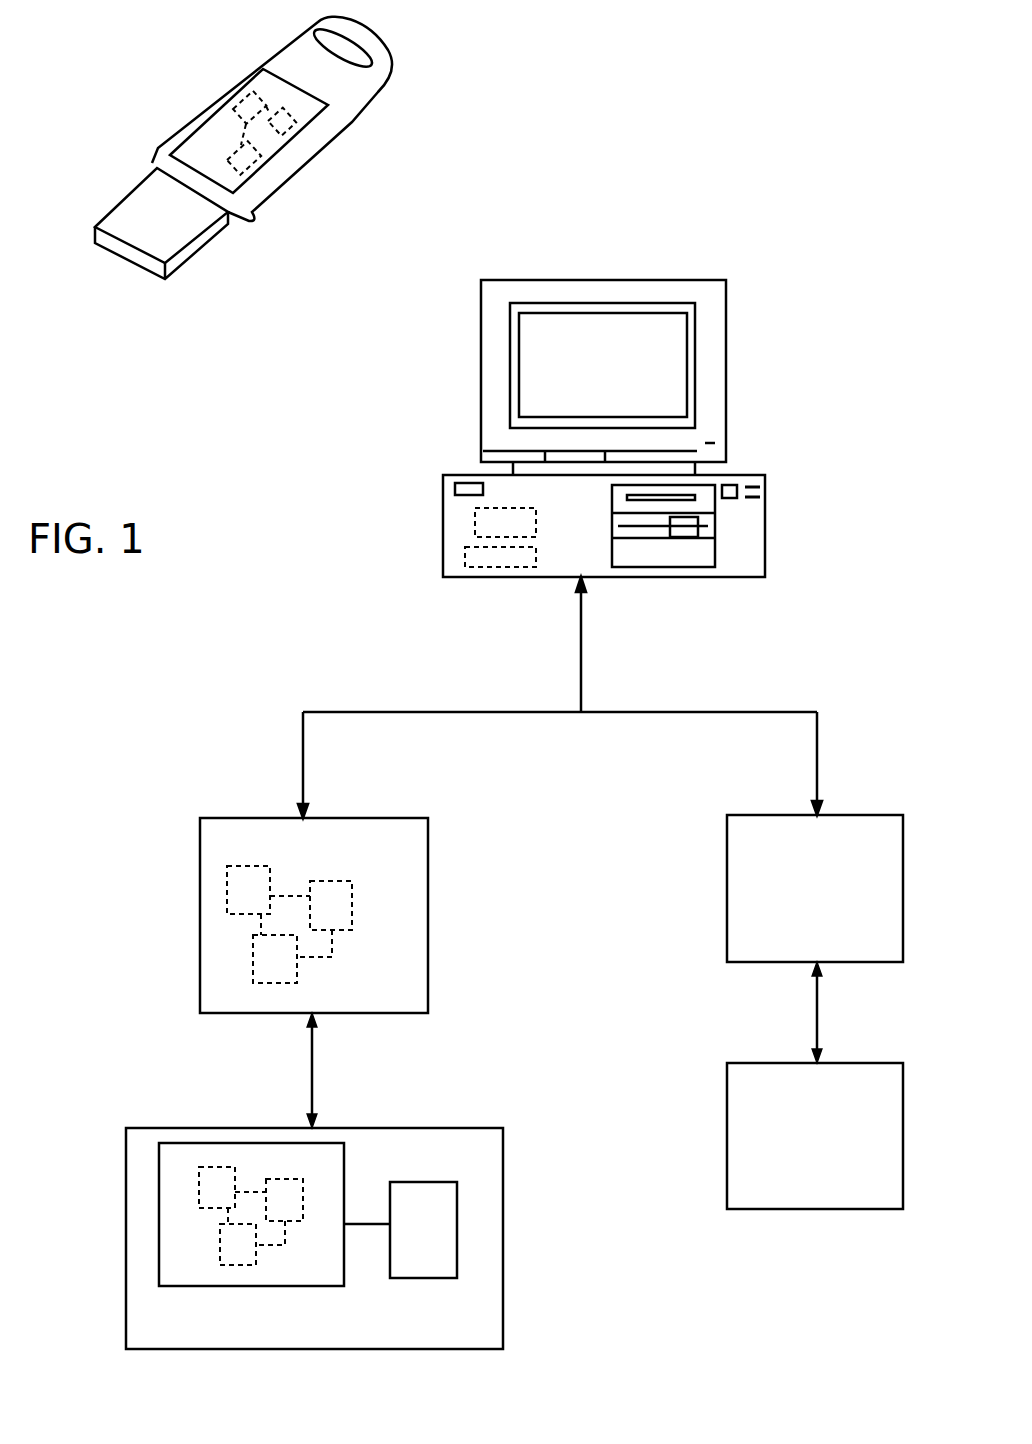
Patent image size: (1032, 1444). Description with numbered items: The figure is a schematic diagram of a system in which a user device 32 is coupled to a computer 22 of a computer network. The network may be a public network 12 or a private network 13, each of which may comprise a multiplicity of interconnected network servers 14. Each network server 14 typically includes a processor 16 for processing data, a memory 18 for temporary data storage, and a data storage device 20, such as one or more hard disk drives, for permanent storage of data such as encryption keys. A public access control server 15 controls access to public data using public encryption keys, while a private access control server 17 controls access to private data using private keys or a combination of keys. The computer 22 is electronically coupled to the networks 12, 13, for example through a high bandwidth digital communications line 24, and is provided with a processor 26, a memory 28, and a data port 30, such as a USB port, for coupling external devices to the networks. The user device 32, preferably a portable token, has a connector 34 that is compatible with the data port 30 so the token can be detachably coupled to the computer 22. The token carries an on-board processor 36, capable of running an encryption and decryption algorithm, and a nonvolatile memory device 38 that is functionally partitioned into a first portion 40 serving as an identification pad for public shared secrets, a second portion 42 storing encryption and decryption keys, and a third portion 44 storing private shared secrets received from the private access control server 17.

The public network 12 is at (503, 1227).
The private network 13 is at (832, 1157).
The network server 14 is at (439, 1243).
The public access control server 15 is at (428, 887).
The processor 16 is at (233, 890).
The private access control server 17 is at (832, 905).
The memory 18 is at (265, 963).
The data storage device 20 is at (342, 915).
The computer 22 is at (756, 439).
The high bandwidth digital communications line 24 is at (583, 655).
The processor 26 is at (491, 575).
The memory 28 is at (475, 522).
The data port 30 is at (463, 483).
The user device 32 is at (167, 141).
The connector 34 is at (167, 228).
The on-board processor 36 is at (243, 95).
The memory device 38 is at (232, 108).
The first portion 40 is at (300, 130).
The second portion 42 is at (281, 136).
The third portion 44 is at (250, 175).